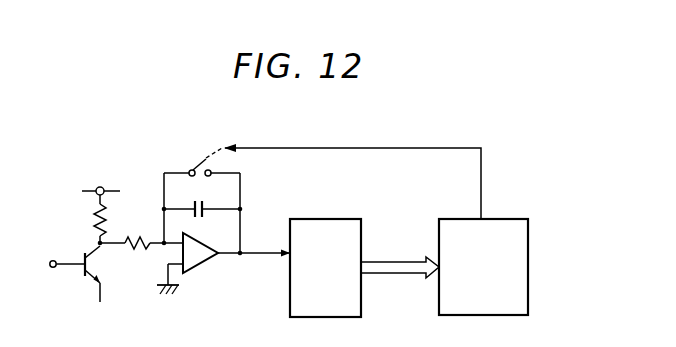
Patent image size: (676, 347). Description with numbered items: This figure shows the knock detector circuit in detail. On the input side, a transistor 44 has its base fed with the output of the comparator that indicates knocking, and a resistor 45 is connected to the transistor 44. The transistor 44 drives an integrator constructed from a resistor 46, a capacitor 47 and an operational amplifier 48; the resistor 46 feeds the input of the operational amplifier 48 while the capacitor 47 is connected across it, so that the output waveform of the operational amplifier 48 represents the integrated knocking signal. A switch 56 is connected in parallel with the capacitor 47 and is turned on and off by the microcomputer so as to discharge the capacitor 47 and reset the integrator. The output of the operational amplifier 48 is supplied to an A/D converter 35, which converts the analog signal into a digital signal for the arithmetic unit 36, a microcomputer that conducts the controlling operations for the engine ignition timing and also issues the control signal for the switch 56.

The A/D converter 35 is at (320, 219).
The arithmetic unit 36 is at (503, 219).
The transistor 44 is at (94, 279).
The resistor 45 is at (96, 217).
The resistor 46 is at (142, 250).
The capacitor 47 is at (209, 186).
The operational amplifier 48 is at (200, 268).
The switch 56 is at (198, 161).